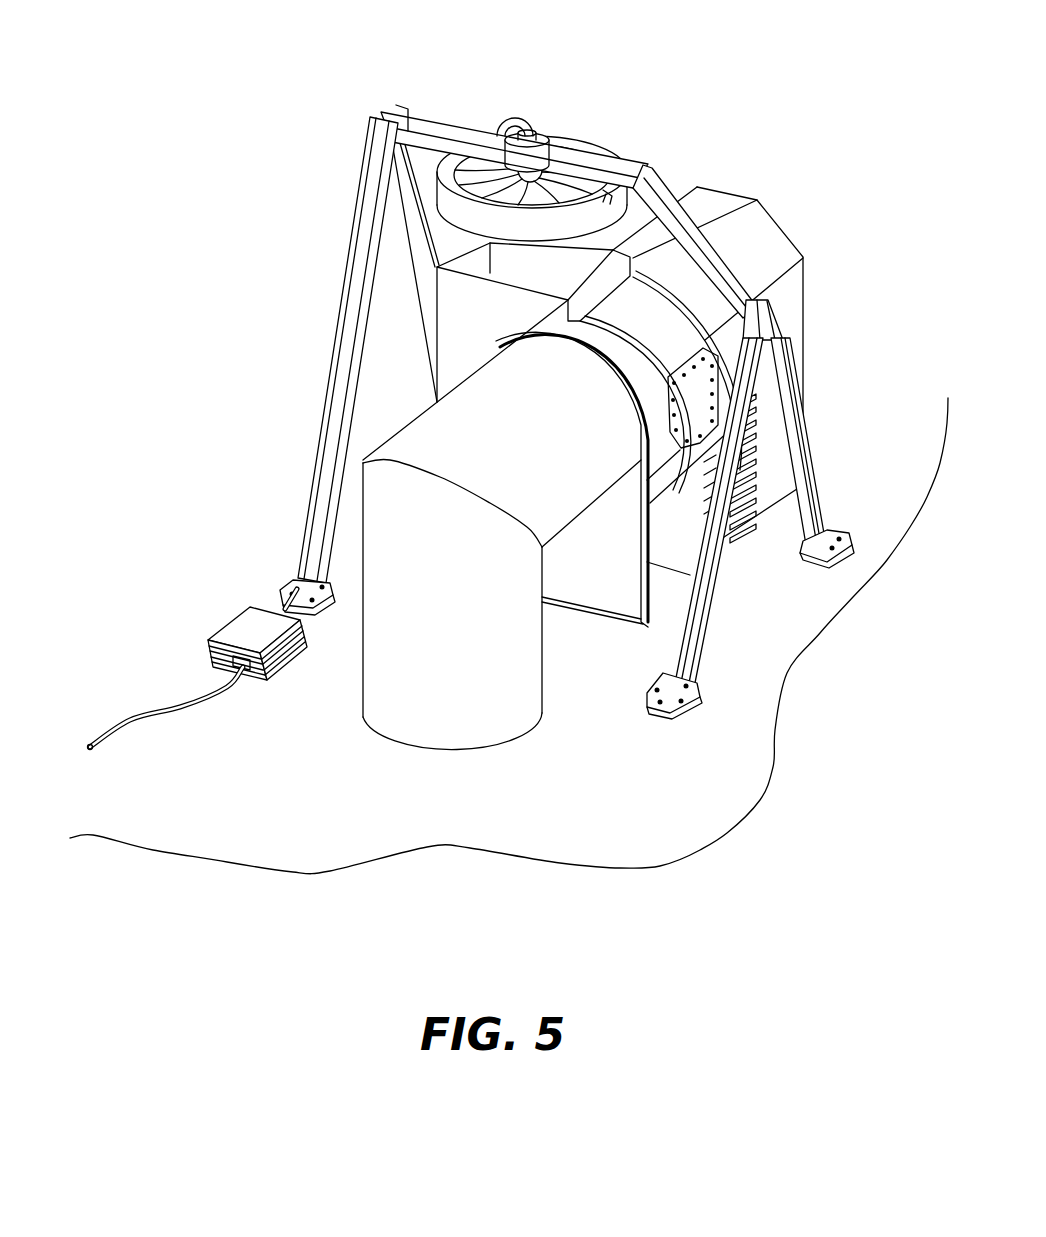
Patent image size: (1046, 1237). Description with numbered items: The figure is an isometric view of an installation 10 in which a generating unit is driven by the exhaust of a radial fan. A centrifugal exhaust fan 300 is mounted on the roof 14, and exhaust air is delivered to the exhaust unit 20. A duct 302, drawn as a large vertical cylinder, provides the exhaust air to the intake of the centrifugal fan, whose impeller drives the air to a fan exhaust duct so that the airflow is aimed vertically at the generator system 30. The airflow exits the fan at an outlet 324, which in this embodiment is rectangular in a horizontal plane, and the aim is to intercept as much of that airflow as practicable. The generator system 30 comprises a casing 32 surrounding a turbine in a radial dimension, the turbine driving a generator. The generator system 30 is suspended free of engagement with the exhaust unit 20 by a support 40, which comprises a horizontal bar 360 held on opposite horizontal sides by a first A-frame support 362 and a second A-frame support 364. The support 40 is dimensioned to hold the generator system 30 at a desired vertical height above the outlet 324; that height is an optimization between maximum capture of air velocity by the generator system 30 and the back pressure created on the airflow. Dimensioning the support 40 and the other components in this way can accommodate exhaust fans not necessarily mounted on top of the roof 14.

The installation 10 is at (412, 59).
The roof 14 is at (713, 813).
The exhaust unit 20 is at (449, 645).
The generator system 30 is at (468, 139).
The casing 32 is at (456, 223).
The support 40 is at (547, 412).
The centrifugal exhaust fan 300 is at (660, 460).
The duct 302 is at (470, 683).
The outlet 324 is at (523, 290).
The horizontal bar 360 is at (648, 190).
The first A-frame support 362 is at (325, 527).
The second A-frame support 364 is at (806, 490).